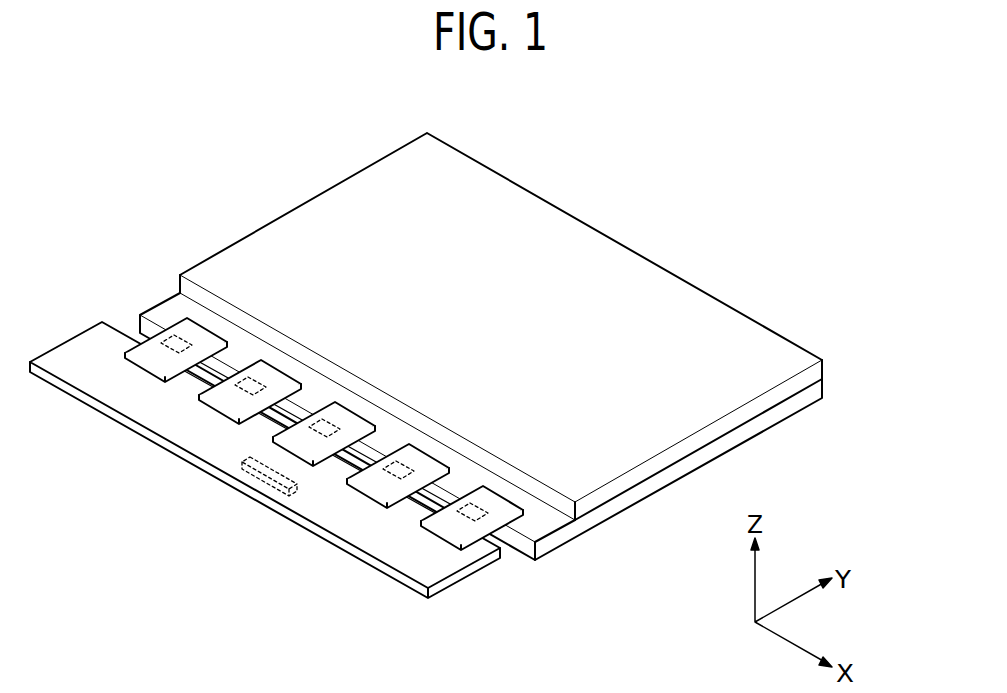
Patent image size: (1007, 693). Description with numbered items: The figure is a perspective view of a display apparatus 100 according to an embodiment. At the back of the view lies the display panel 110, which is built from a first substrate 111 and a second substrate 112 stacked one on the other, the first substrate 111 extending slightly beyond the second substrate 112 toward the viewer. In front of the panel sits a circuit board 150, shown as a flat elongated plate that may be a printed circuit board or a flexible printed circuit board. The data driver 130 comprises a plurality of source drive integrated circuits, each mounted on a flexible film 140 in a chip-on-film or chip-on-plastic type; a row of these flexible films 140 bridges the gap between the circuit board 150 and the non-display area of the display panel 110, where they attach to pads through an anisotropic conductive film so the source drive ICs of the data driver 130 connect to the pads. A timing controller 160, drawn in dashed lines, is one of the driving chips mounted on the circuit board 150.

The display apparatus 100 is at (488, 390).
The display panel 110 is at (543, 346).
The first substrate 111 is at (814, 391).
The second substrate 112 is at (816, 371).
The data driver 130 is at (473, 527).
The flexible film 140 is at (445, 529).
The circuit board 150 is at (380, 545).
The timing controller 160 is at (272, 474).